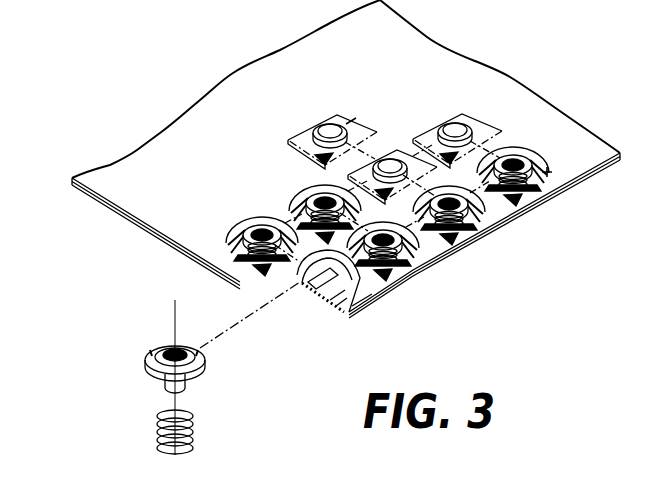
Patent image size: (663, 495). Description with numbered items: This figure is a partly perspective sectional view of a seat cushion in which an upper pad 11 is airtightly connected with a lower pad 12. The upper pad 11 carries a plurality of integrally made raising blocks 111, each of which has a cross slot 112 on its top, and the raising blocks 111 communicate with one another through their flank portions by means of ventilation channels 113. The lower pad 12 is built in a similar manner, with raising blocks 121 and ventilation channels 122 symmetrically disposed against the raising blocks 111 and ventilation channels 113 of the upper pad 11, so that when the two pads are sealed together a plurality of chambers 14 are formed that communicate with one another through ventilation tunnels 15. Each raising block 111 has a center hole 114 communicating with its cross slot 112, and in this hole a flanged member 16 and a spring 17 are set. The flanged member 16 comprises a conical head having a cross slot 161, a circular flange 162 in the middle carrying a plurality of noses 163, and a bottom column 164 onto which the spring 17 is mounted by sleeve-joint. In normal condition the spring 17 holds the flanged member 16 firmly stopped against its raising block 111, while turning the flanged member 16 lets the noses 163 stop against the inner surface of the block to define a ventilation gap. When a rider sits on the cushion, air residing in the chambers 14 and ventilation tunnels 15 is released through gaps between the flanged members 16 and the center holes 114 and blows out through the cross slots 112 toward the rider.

The upper pad 11 is at (142, 220).
The lower pad 12 is at (103, 207).
The raising block 111 is at (352, 120).
The cross slot 112 is at (250, 222).
The ventilation channel 113 is at (380, 138).
The center hole 114 is at (381, 294).
The chamber 14 is at (328, 300).
The ventilation tunnel 15 is at (284, 290).
The raising block 121 is at (313, 305).
The ventilation channel 122 is at (280, 292).
The flanged member 16 is at (171, 366).
The cross slot 161 is at (175, 345).
The circular flange 162 is at (200, 362).
The nose 163 is at (150, 352).
The bottom column 164 is at (190, 388).
The spring 17 is at (160, 432).